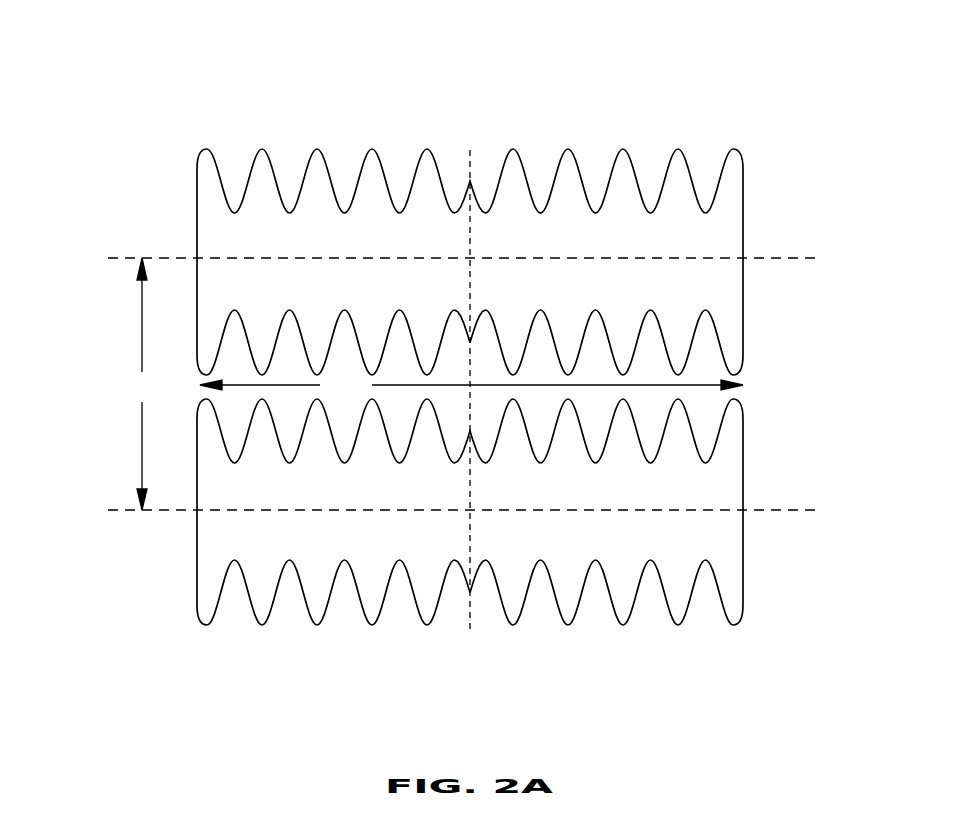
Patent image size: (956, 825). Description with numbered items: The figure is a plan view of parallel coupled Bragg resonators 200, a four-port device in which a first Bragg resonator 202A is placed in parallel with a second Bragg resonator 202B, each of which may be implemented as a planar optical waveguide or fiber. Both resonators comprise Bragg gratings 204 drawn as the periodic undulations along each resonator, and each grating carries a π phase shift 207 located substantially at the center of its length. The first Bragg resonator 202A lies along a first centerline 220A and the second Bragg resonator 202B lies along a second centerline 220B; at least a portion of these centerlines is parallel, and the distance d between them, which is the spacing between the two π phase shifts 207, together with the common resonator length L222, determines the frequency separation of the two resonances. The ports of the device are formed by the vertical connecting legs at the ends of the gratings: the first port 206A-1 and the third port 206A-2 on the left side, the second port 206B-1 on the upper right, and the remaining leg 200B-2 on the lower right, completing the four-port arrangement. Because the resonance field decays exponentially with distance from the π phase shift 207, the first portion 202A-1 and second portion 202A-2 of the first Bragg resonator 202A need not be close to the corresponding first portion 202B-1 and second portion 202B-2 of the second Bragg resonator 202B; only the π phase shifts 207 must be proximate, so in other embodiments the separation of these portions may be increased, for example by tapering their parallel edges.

The parallel coupled Bragg resonators 200 is at (487, 33).
The Bragg gratings 204 is at (261, 148).
The first Bragg resonator 202A is at (470, 236).
The first portion of the first Bragg resonator 202A-1 is at (317, 296).
The second portion of the first Bragg resonator 202A-2 is at (658, 295).
The second Bragg resonator 202B is at (470, 387).
The first portion of the second Bragg resonator 202B-1 is at (317, 550).
The second portion of the second Bragg resonator 202B-2 is at (618, 550).
The π phase shift 207 is at (470, 186).
The first port 206A-1 is at (197, 234).
The second port 206B-1 is at (743, 231).
The third port 206A-2 is at (197, 525).
The right connecting segment of second electrode 200B-2 is at (743, 540).
The first centerline 220A is at (127, 258).
The second centerline 220B is at (125, 508).
The length L of the Bragg resonators L222 is at (471, 385).